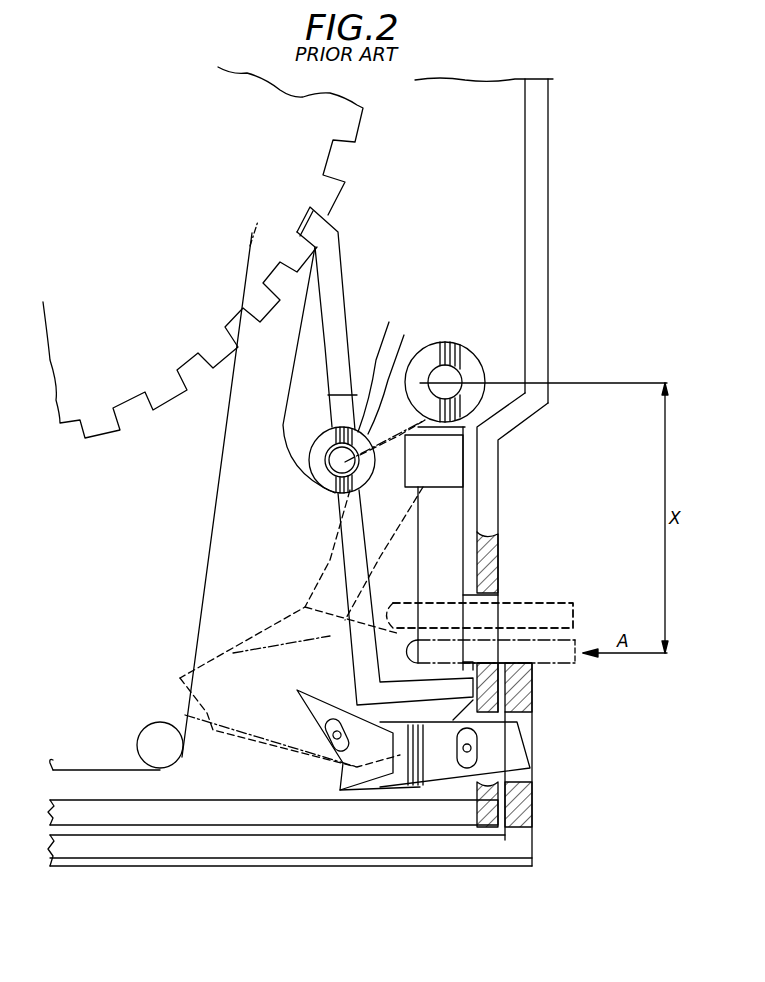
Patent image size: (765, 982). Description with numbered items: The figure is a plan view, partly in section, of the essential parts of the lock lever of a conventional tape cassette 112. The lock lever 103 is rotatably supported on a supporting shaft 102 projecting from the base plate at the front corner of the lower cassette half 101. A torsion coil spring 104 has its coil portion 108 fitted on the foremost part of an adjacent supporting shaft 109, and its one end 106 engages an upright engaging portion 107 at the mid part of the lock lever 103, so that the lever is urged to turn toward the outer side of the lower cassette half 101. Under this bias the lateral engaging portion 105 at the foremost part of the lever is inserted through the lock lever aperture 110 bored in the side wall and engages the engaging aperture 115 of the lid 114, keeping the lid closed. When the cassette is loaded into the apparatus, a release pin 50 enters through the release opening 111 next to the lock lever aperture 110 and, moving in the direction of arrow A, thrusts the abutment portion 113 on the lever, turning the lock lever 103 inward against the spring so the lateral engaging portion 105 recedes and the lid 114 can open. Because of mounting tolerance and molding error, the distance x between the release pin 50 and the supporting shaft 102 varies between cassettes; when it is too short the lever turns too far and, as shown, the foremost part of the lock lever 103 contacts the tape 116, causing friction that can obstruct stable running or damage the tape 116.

The lower cassette half 101 is at (549, 306).
The supporting shaft 102 is at (448, 368).
The lock lever 103 is at (450, 523).
The torsion coil spring 104 is at (395, 348).
The lateral engaging portion 105 is at (513, 740).
The one end of the torsion coil spring 106 is at (545, 420).
The upright engaging portion 107 is at (455, 467).
The coil portion 108 is at (330, 466).
The supporting shaft 109 is at (318, 452).
The lock lever aperture 110 is at (505, 758).
The release opening 111 is at (497, 590).
The tape cassette 112 is at (498, 455).
The abutment portion 113 is at (497, 620).
The lid 114 is at (283, 852).
The engaging aperture 115 is at (527, 777).
The tape 116 is at (92, 772).
The release pin 50 is at (547, 663).